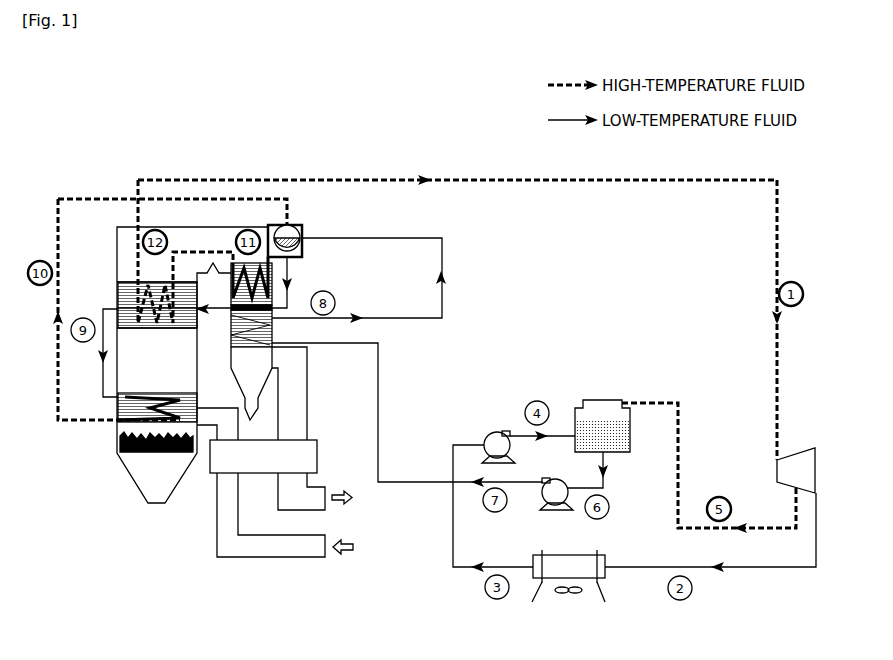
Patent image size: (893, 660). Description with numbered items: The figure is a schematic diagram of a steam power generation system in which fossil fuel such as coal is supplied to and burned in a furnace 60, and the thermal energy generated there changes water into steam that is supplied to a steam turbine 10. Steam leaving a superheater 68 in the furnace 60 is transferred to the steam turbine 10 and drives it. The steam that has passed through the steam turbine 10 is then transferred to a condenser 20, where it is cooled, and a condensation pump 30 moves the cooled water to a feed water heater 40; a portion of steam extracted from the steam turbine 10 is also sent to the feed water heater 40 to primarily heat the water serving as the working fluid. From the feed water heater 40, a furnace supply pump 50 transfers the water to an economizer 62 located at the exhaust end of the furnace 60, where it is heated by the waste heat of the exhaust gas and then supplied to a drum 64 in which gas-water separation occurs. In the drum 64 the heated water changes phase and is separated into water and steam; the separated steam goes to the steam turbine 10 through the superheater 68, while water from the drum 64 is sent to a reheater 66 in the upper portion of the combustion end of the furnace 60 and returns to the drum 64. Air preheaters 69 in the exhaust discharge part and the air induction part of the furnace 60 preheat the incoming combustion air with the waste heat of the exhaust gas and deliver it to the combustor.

The steam turbine 10 is at (815, 472).
The condenser 20 is at (580, 578).
The condensation pump 30 is at (497, 432).
The feed water heater 40 is at (602, 400).
The furnace supply pump 50 is at (558, 505).
The furnace 60 is at (117, 250).
The economizer 62 is at (272, 330).
The drum 64 is at (293, 226).
The reheater 66 is at (117, 420).
The superheater 68 is at (150, 300).
The air preheater 69 is at (255, 462).